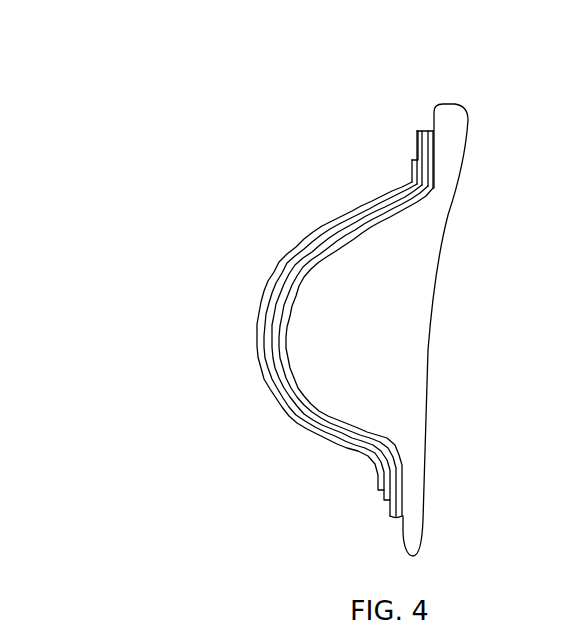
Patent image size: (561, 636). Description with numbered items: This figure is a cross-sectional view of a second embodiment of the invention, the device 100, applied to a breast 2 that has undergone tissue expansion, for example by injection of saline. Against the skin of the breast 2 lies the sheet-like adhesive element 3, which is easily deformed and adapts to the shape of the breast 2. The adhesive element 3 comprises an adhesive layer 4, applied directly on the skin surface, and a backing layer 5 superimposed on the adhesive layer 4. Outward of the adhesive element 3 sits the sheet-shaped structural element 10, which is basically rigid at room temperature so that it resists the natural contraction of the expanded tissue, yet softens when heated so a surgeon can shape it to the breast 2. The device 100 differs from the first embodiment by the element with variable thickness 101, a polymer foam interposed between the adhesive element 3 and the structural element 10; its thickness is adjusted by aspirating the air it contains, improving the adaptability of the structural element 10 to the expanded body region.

The device 100 is at (228, 314).
The structural element 10 is at (313, 232).
The element with variable thickness 101 is at (350, 222).
The breast 2 is at (393, 336).
The adhesive element 3 is at (423, 138).
The adhesive layer 4 is at (300, 385).
The backing layer 5 is at (305, 398).